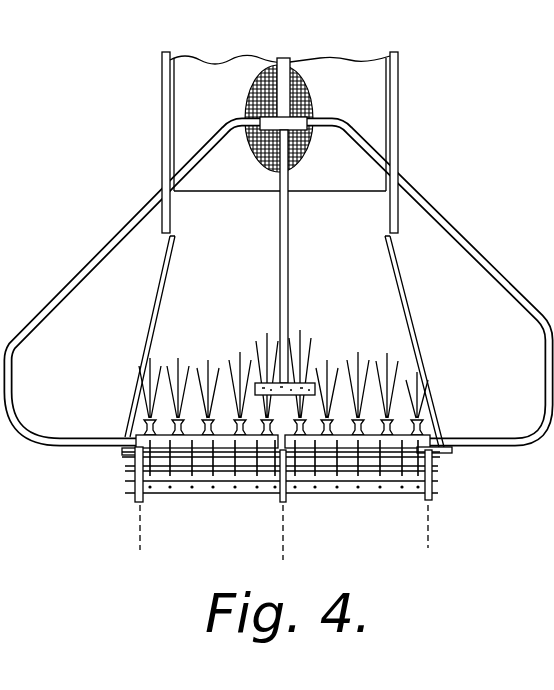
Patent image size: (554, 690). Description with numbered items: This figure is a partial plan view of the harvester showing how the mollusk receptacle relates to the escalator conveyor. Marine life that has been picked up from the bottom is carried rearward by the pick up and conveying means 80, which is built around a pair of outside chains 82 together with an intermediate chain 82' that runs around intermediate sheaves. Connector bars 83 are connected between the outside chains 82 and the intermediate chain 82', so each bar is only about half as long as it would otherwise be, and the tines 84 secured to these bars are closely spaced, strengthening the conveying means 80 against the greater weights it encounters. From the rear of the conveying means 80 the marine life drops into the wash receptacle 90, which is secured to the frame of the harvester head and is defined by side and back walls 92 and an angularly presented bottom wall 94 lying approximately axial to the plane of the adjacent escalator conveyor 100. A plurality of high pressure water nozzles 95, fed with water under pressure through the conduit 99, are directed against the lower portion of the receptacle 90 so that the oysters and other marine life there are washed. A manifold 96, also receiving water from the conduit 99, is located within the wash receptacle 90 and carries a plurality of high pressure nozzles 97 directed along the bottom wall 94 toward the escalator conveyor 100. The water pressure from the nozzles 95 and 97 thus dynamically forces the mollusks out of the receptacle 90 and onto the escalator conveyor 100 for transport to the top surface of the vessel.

The pick up and conveying means 80 is at (457, 482).
The outside chains 82 is at (281, 498).
The intermediate chain 82' is at (311, 512).
The connector bars 83 is at (250, 488).
The tines 84 is at (213, 488).
The wash receptacle 90 is at (426, 307).
The side and back walls 92 is at (143, 341).
The bottom wall 94 is at (338, 280).
The high pressure water nozzles 95 is at (255, 387).
The manifold 96 is at (421, 437).
The high pressure nozzles 97 is at (414, 427).
The conduit 99 is at (285, 63).
The escalator conveyor 100 is at (419, 103).